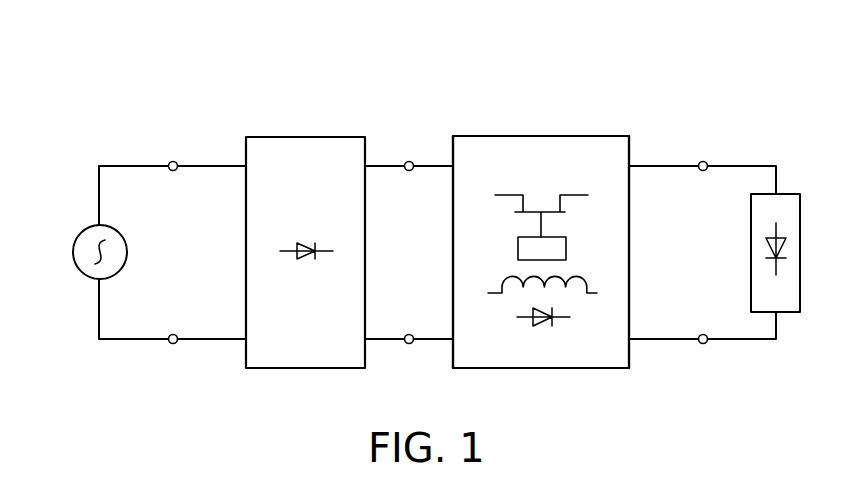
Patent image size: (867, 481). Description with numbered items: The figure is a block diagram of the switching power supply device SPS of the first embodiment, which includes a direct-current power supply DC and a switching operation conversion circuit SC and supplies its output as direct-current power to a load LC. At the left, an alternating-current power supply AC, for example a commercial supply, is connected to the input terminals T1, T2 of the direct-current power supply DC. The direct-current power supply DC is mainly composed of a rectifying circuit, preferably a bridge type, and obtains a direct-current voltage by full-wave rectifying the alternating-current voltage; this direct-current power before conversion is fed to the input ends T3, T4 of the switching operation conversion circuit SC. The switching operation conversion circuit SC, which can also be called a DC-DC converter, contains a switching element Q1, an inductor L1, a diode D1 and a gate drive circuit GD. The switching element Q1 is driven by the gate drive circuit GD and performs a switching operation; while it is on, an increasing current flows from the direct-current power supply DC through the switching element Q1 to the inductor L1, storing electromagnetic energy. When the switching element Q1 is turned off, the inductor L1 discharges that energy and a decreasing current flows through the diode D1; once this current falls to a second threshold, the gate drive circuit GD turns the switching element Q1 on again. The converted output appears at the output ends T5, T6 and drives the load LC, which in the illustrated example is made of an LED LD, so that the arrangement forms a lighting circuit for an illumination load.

The switching power supply device SPS is at (435, 83).
The alternating-current power supply AC is at (73, 254).
The direct-current power supply DC is at (302, 137).
The switching operation conversion circuit SC is at (532, 136).
The switching element Q1 is at (536, 205).
The gate drive circuit GD is at (518, 250).
The inductor L1 is at (580, 279).
The diode D1 is at (549, 325).
The load LC is at (800, 254).
The LED LD is at (770, 247).
The input terminal T1 is at (173, 161).
The input terminal T2 is at (173, 344).
The input end T3 is at (409, 161).
The input end T4 is at (409, 344).
The output end T5 is at (704, 161).
The output end T6 is at (703, 344).